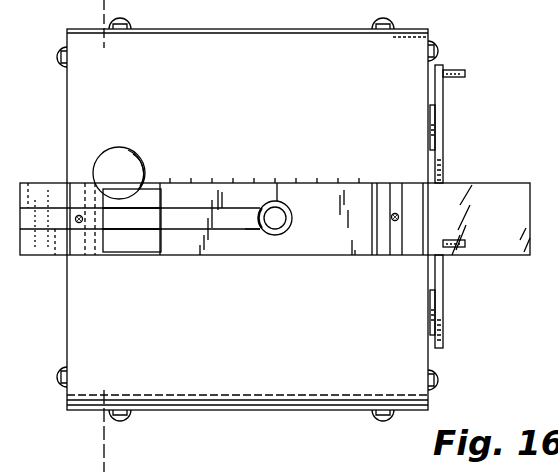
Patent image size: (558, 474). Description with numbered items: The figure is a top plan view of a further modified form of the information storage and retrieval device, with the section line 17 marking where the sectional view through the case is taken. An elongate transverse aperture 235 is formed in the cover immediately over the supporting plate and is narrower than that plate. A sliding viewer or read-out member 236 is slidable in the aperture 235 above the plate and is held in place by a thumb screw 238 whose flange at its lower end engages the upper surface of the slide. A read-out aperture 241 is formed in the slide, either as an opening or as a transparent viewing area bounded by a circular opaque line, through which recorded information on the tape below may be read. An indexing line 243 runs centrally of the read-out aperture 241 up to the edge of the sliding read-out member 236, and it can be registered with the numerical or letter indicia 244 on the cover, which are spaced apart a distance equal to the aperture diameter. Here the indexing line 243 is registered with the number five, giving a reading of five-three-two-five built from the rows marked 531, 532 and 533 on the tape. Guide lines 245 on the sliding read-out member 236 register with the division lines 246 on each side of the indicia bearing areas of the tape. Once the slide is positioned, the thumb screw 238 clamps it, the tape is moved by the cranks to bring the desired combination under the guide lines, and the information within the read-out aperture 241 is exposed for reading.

The section line 17- 17 is at (150, 447).
The elongate transverse aperture 235 is at (368, 185).
The sliding viewer or read-out member 236 is at (252, 245).
The thumb screw 238 is at (112, 168).
The read-out aperture 241 is at (283, 228).
The indexing line 243 is at (277, 183).
The numerical or letter indicia 244 is at (238, 165).
The guide lines 245 is at (32, 205).
The division lines 246 is at (52, 232).
The marker window 531 is at (132, 199).
The marker window 532 is at (132, 218).
The marker window 533 is at (132, 240).